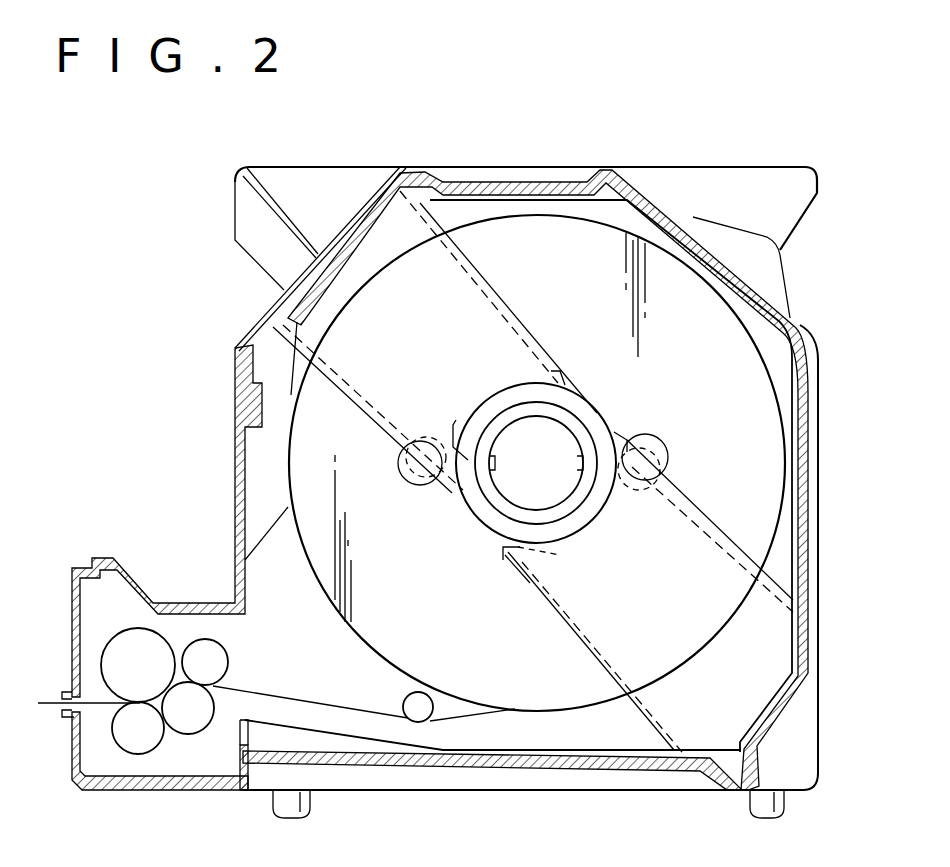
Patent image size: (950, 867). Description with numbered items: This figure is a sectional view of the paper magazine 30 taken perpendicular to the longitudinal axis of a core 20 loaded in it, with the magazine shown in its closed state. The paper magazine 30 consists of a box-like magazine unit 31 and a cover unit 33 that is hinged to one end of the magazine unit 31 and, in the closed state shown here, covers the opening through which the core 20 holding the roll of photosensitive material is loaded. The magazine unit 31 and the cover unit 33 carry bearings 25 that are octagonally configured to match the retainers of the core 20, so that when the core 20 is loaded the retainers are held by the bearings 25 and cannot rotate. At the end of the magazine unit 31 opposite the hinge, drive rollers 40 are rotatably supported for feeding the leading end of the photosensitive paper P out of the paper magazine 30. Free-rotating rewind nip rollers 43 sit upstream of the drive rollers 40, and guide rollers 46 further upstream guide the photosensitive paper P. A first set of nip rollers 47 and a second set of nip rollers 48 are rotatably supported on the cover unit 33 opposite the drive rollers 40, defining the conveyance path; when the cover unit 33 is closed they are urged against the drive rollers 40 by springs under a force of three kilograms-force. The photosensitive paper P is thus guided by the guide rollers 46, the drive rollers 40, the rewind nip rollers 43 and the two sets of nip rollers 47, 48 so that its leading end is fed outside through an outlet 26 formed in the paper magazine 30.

The paper magazine 30 is at (371, 165).
The magazine unit 31 is at (251, 326).
The core 20 is at (712, 325).
The bearings 25 is at (462, 293).
The cover unit 33 is at (815, 463).
The drive rollers 40 is at (118, 648).
The nip rollers 43 is at (212, 664).
The guide rollers 46 is at (418, 704).
The first set of nip rollers 47 is at (138, 743).
The second set of nip rollers 48 is at (189, 716).
The outlet 26 is at (58, 694).
The photosensitive paper P is at (50, 706).